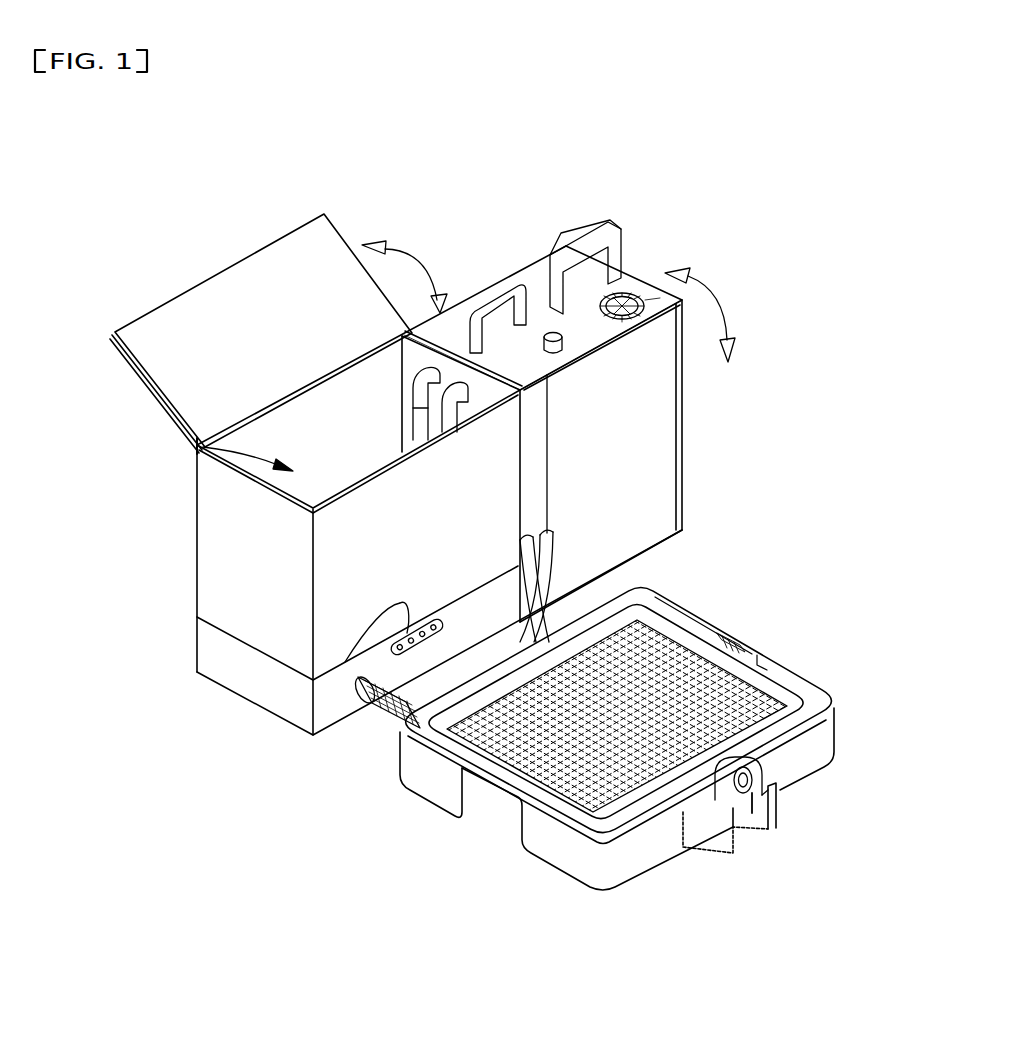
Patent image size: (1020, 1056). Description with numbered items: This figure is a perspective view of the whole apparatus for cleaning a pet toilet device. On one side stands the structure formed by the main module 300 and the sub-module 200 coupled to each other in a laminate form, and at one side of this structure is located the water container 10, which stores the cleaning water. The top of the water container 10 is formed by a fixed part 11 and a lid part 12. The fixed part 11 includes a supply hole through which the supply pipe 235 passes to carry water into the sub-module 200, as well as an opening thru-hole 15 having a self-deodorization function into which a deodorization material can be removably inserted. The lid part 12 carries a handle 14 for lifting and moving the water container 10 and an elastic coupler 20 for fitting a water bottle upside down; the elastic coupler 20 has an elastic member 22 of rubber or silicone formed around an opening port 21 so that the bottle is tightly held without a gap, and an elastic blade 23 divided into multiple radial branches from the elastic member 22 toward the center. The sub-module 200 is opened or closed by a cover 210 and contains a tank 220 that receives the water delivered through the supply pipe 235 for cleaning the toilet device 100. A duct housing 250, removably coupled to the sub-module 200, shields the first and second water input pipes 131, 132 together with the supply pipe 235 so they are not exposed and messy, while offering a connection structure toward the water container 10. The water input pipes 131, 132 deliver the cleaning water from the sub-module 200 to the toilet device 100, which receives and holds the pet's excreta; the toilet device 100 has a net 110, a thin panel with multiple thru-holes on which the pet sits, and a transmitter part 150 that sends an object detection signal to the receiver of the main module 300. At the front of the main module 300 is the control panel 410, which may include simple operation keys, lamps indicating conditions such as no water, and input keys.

The water container 10 is at (694, 405).
The fixed part 11 is at (490, 288).
The lid part 12 is at (530, 270).
The handle 14 is at (588, 236).
The opening thru-hole 15 is at (563, 344).
The elastic coupler 20 is at (646, 278).
The opening port 21 is at (634, 290).
The elastic member 22 is at (631, 321).
The elastic blade 23 is at (646, 299).
The toilet device 100 is at (800, 651).
The net 110 is at (712, 675).
The first water input pipe 131 is at (430, 393).
The second water input pipe 132 is at (448, 413).
The transmitter part 150 is at (763, 783).
The sub-module 200 is at (186, 560).
The cover 210 is at (165, 335).
The tank 220 is at (197, 446).
The supply pipe 235 is at (490, 301).
The duct housing 250 is at (538, 483).
The main module 300 is at (186, 643).
The control panel 410 is at (400, 603).